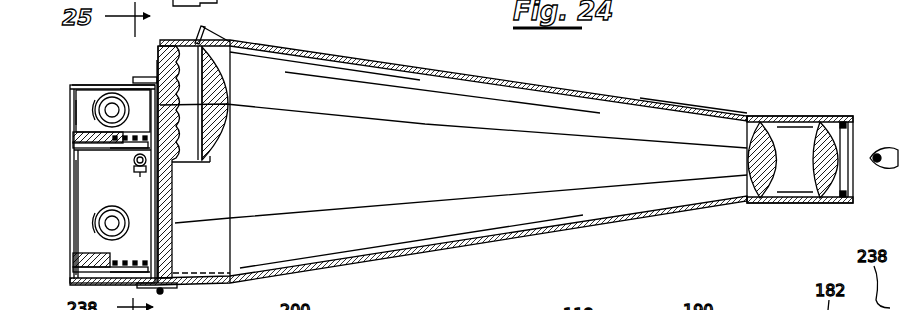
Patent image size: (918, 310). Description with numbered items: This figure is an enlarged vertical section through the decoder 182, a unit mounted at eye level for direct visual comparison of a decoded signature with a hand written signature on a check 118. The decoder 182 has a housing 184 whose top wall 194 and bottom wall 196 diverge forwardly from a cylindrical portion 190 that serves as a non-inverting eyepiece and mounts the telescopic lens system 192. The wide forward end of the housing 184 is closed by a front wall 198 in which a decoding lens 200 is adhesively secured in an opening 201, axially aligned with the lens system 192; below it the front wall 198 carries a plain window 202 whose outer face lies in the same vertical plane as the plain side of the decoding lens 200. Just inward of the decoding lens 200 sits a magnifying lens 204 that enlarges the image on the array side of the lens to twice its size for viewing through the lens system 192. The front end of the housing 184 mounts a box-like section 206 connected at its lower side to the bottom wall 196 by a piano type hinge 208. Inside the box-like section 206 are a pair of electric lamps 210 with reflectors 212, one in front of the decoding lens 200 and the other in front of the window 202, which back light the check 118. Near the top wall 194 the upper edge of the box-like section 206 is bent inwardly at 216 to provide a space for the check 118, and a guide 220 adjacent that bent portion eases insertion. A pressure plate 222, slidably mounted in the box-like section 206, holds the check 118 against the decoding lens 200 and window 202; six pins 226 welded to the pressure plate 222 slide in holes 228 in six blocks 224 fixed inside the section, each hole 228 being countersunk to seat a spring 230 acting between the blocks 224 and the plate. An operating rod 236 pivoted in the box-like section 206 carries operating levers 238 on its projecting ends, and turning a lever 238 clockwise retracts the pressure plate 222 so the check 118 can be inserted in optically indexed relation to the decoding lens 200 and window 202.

The check 118 is at (147, 77).
The decoder 182 is at (405, 62).
The housing 184 is at (640, 103).
The cylindrical portion 190 is at (788, 117).
The telescopic lens system 192 is at (822, 200).
The top wall 194 is at (556, 92).
The bottom wall 196 is at (540, 232).
The front wall 198 is at (173, 273).
The decoding lens 200 is at (187, 162).
The opening 201 is at (168, 45).
The window 202 is at (173, 203).
The magnifying lens 204 is at (229, 115).
The box-like section 206 is at (74, 198).
The piano type hinge 208 is at (165, 292).
The electric lamps 210 is at (98, 98).
The reflectors 212 is at (73, 90).
The inwardly bent portion 216 is at (133, 88).
The guide 220 is at (147, 83).
The pressure plate 222 is at (172, 215).
The blocks 224 is at (73, 132).
The pins 226 is at (73, 112).
The holes 228 is at (73, 148).
The spring 230 is at (76, 163).
The operating rod 236 is at (132, 166).
The operating levers 238 is at (235, 50).